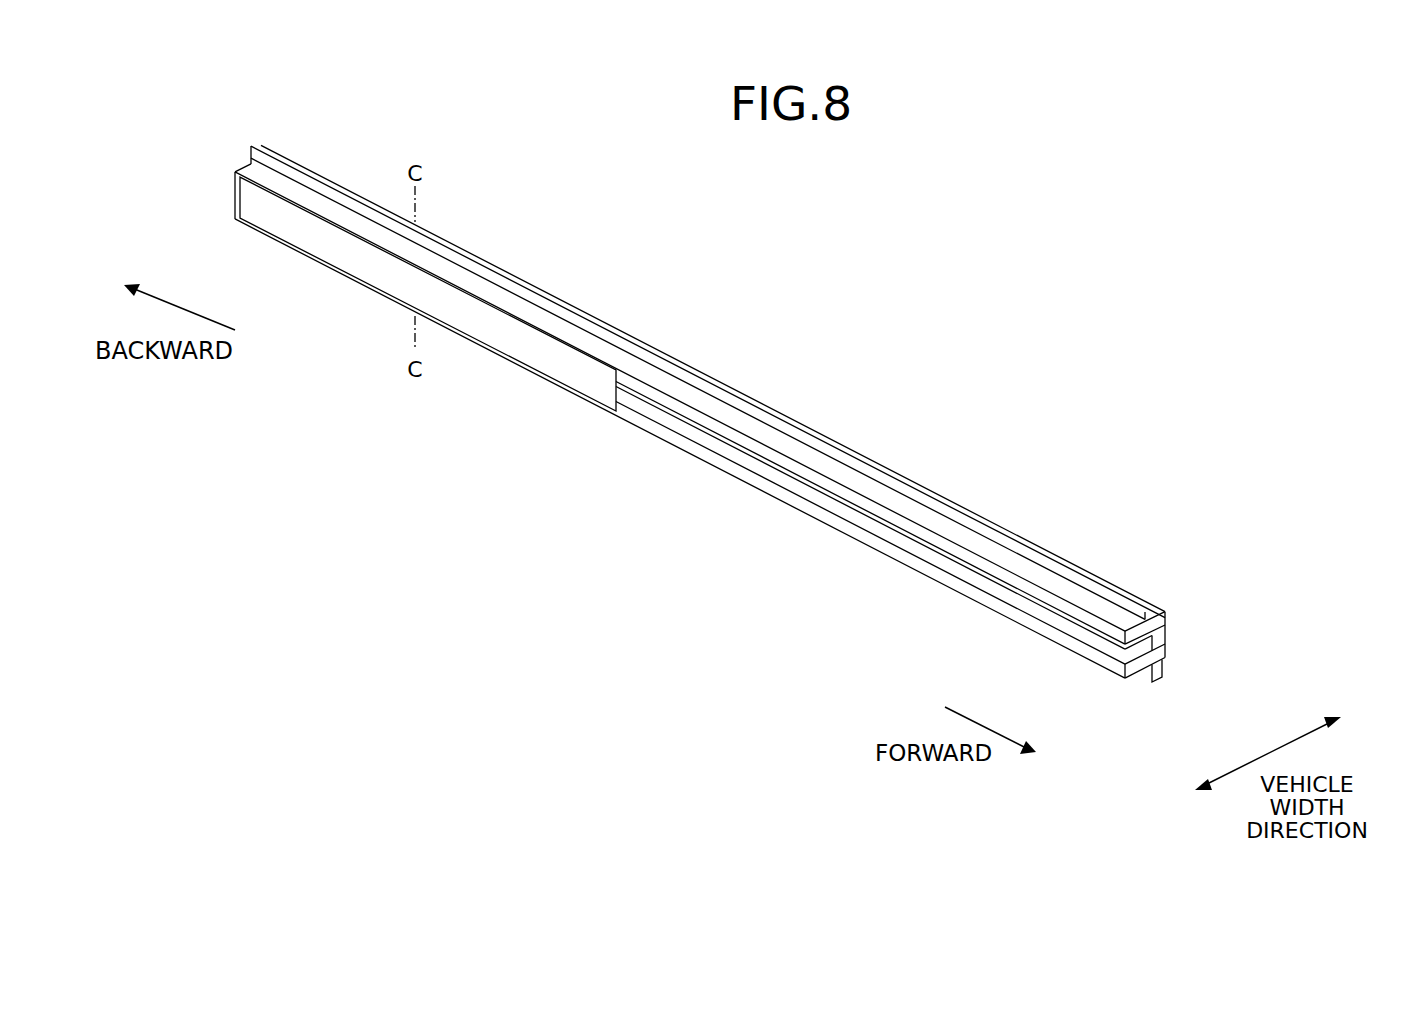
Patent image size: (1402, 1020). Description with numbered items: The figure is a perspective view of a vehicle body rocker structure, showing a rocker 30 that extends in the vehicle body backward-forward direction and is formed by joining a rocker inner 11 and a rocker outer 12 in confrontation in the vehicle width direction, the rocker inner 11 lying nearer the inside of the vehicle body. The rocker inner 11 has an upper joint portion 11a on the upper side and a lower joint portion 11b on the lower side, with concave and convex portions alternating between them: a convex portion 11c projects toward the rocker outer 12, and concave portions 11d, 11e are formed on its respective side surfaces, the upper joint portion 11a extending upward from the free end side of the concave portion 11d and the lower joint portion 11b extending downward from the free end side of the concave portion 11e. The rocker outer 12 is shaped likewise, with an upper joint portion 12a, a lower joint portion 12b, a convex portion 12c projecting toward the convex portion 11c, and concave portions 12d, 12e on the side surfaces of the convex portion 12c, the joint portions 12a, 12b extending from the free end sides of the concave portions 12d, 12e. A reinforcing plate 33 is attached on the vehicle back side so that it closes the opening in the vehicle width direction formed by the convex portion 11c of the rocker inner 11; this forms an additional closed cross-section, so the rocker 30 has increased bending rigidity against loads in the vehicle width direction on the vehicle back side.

The rocker 30 is at (1004, 420).
The rocker inner 11 is at (1028, 570).
The upper joint portion 11a is at (1120, 600).
The lower joint portion 11b is at (1148, 682).
The convex portion 11c is at (1135, 655).
The concave portion 11d is at (1126, 640).
The concave portion 11e is at (996, 600).
The rocker outer 12 is at (1056, 545).
The upper joint portion 12a is at (1152, 598).
The lower joint portion 12b is at (1162, 676).
The convex portion 12c is at (1168, 640).
The concave portion 12d is at (1170, 612).
The concave portion 12e is at (1167, 657).
The reinforcing plate 33 is at (565, 366).